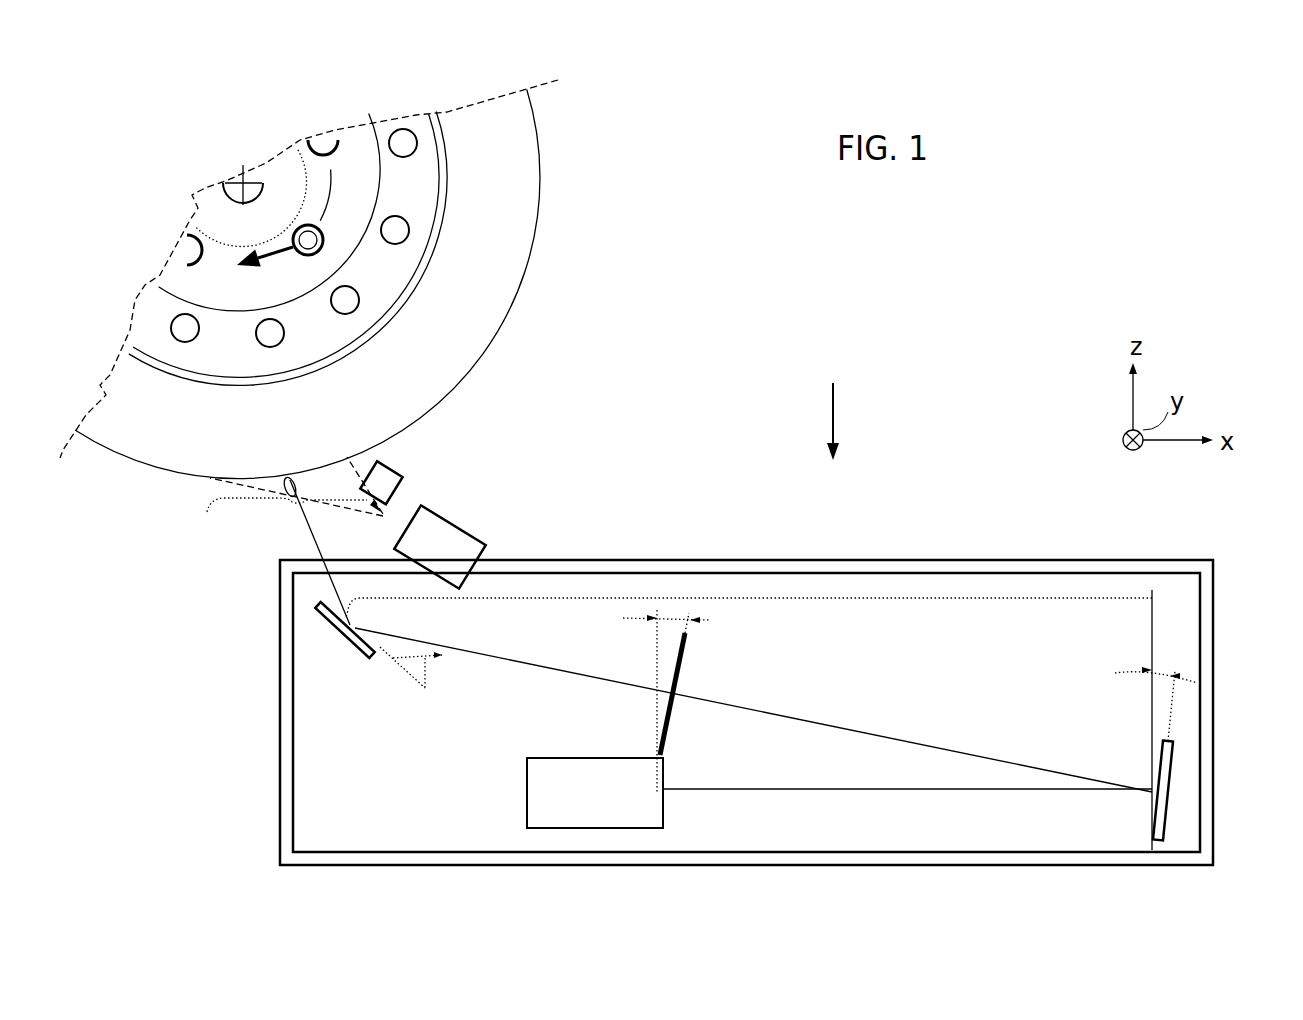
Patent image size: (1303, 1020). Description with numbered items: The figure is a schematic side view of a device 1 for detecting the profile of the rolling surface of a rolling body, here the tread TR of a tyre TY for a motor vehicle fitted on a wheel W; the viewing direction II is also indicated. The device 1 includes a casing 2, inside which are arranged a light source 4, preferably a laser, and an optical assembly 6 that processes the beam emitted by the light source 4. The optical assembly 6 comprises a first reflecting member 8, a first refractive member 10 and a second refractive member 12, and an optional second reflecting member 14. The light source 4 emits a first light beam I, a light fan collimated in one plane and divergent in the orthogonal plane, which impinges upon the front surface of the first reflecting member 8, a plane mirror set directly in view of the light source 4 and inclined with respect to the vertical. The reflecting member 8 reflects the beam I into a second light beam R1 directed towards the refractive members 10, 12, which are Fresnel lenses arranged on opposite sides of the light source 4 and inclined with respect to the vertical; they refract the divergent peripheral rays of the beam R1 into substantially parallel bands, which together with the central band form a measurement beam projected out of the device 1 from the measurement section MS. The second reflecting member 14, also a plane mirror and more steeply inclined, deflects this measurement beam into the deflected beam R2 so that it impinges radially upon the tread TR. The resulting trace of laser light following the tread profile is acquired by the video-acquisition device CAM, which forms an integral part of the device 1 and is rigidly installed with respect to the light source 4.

The device 1 is at (978, 506).
The casing 2 is at (608, 561).
The light source 4 is at (526, 790).
The optical assembly 6 is at (760, 598).
The first reflecting member 8 is at (1156, 738).
The first refractive member 10 is at (719, 682).
The second refractive member 12 is at (686, 672).
The second reflecting member 14 is at (322, 618).
The video-acquisition device CAM is at (452, 530).
The tyre TY is at (541, 234).
The tread TR is at (492, 353).
The wheel W is at (390, 284).
The measurement section MS is at (288, 476).
The second light beam R1 is at (885, 731).
The deflected beam R2 is at (308, 523).
The first light beam I is at (800, 790).
The viewing direction II is at (843, 419).